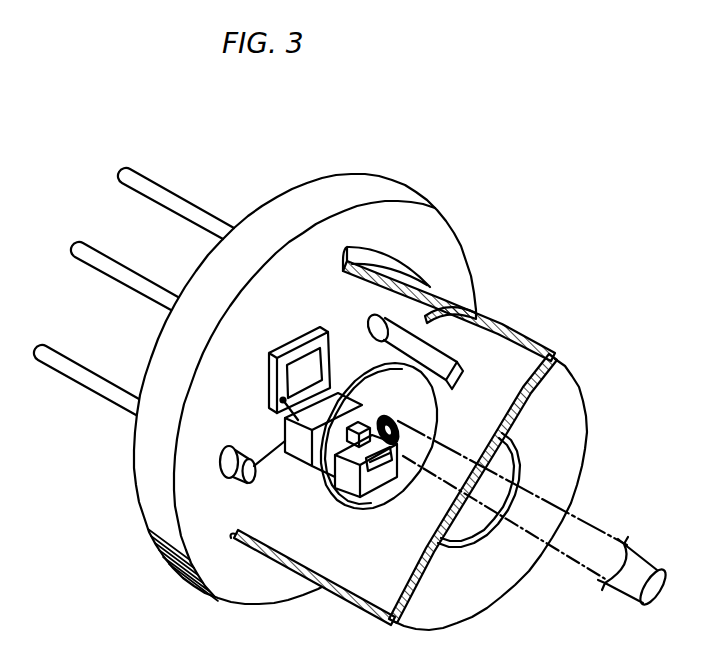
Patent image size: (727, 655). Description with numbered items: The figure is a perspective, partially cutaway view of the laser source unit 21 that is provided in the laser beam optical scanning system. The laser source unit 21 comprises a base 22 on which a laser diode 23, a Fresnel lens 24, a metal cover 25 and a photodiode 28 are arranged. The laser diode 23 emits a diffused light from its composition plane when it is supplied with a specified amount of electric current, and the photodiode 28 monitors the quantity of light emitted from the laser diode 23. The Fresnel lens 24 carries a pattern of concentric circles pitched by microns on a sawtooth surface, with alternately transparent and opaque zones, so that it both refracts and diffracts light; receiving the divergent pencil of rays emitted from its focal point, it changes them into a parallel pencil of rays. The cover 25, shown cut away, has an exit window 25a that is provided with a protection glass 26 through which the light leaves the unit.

The laser source unit 21 is at (260, 152).
The base 22 is at (359, 177).
The laser diode 23 is at (319, 456).
The Fresnel lens 24 is at (375, 497).
The metal cover 25 is at (506, 331).
The exit window 25a is at (521, 463).
The protection glass 26 is at (525, 396).
The photodiode 28 is at (302, 362).